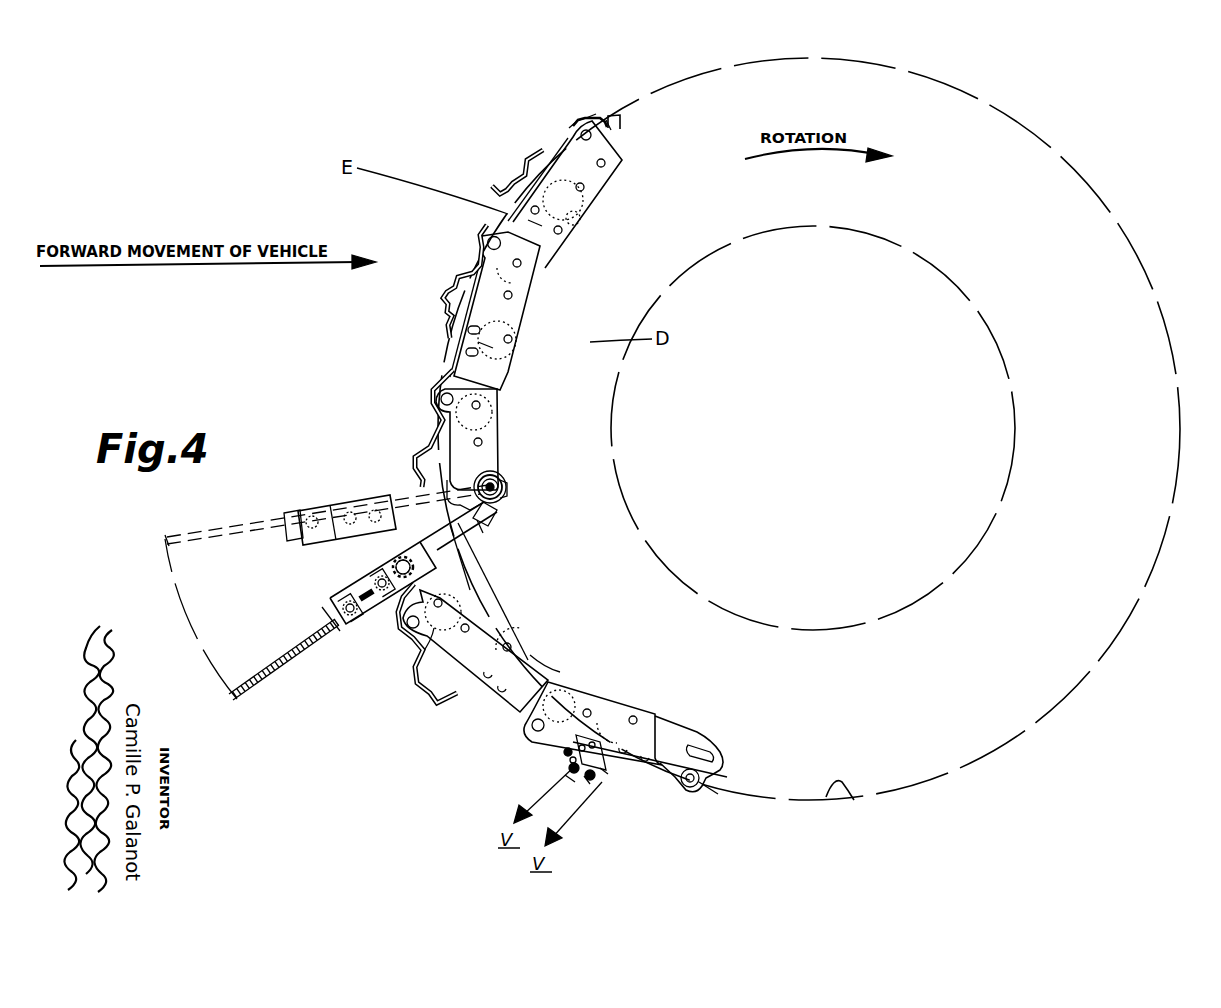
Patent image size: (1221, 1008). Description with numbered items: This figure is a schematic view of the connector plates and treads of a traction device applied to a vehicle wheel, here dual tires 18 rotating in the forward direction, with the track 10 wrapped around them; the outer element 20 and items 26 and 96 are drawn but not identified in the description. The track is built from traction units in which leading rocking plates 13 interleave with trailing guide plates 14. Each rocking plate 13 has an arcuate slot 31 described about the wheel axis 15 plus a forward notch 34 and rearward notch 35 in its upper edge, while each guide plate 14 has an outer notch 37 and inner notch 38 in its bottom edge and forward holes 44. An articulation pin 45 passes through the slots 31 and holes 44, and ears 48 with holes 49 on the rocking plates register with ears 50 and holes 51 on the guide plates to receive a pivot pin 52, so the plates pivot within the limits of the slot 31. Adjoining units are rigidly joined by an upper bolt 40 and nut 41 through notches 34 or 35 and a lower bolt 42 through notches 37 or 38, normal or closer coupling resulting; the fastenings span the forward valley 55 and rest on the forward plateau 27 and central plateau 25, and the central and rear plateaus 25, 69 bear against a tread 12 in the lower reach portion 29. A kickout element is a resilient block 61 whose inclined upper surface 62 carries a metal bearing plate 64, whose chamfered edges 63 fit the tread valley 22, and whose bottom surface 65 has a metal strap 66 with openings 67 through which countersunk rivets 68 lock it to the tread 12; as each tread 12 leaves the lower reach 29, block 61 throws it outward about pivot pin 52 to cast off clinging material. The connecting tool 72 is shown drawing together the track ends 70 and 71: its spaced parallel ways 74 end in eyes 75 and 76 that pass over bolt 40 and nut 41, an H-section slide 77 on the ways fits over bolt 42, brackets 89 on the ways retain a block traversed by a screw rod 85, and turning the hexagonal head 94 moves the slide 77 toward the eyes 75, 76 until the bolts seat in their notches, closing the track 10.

The track 10 is at (525, 315).
The tread 12 is at (514, 727).
The rocking plate 13 is at (503, 377).
The guide plate 14 is at (622, 166).
The axis 15 is at (482, 246).
The dual tires 18 is at (1002, 490).
The tire 20 is at (1052, 722).
The valley 22 is at (445, 292).
The central plateau 25 is at (421, 656).
The spring wire 26 is at (500, 184).
The forward plateau 27 is at (620, 115).
The lower reach portion 29 is at (854, 800).
The arcuate slot 31 is at (520, 262).
The forward notch 34 is at (545, 232).
The rearward notch 35 is at (540, 250).
The outer notch 37 is at (466, 352).
The inner notch 38 is at (468, 330).
The upper bolt 40 is at (512, 336).
The nut 41 is at (507, 496).
The lower bolt 42 is at (492, 348).
The drilled holes 44 is at (605, 162).
The articulation pin 45 is at (522, 263).
The ears 48 is at (700, 786).
The holes 49 is at (688, 787).
The ears 50 is at (578, 122).
The holes 51 is at (586, 118).
The pivot pin 52 is at (611, 130).
The forward valley 55 is at (570, 127).
The block 61 is at (603, 762).
The upper surface 62 is at (592, 742).
The chamfered edges 63 is at (573, 766).
The metal bearing plate 64 is at (582, 745).
The bottom surface 65 is at (566, 752).
The metal strap 66 is at (572, 763).
The drilled openings 67 is at (586, 778).
The countersunk flush head rivets 68 is at (566, 776).
The rear plateau 69 is at (542, 224).
The track end 70 is at (407, 532).
The track end 71 is at (500, 508).
The connecting tool 72 is at (357, 628).
The ways 74 is at (472, 545).
The eye 75 is at (496, 482).
The eye 76 is at (502, 485).
The H-section slide 77 is at (392, 569).
The screw rod 85 is at (278, 662).
The brackets 89 is at (341, 603).
The hexagonal head 94 is at (344, 628).
The hole 96 is at (584, 187).